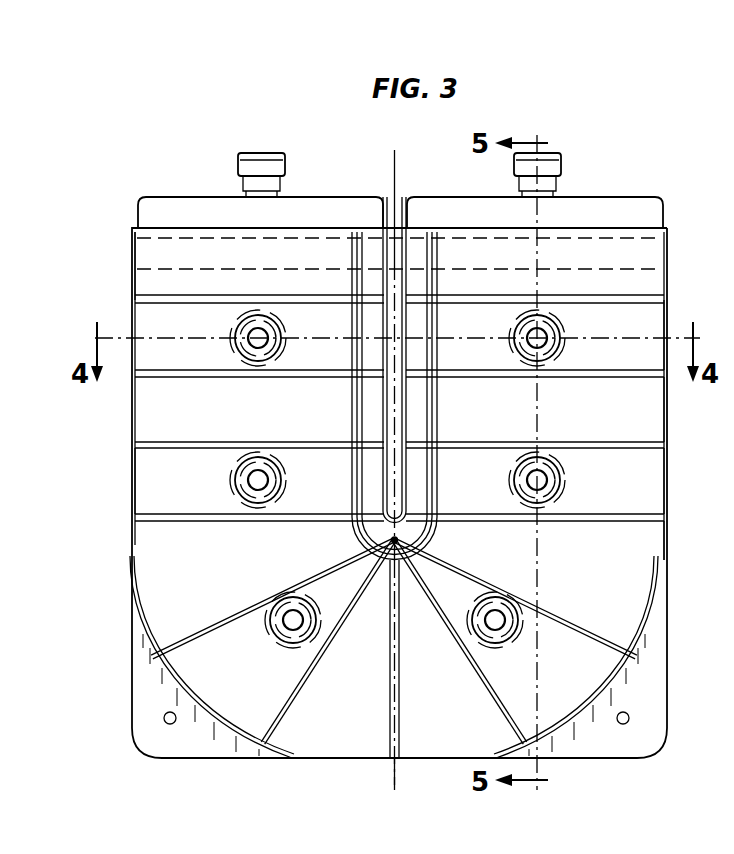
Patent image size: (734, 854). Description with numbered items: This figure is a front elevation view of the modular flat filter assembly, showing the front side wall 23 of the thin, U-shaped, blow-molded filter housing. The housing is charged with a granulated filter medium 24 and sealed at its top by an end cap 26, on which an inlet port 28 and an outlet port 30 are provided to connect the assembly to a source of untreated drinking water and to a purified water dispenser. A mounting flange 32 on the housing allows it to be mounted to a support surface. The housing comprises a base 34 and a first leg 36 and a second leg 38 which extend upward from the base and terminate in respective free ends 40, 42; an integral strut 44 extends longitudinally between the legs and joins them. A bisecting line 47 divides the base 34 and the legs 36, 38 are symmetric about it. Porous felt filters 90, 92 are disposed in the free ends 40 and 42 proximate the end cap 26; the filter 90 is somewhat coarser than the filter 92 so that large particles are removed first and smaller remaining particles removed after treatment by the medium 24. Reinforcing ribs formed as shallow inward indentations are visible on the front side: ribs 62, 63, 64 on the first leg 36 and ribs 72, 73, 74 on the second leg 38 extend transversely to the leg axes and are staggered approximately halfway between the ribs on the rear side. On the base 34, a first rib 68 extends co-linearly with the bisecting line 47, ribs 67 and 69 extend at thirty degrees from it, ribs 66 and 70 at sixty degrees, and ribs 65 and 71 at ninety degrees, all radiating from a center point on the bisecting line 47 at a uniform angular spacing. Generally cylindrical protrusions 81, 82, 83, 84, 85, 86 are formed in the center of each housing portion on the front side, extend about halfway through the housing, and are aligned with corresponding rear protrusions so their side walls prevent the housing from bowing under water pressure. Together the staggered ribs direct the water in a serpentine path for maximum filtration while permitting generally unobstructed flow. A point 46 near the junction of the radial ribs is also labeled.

The front side wall 23 is at (160, 541).
The filter medium 24 is at (315, 742).
The end cap 26 is at (172, 197).
The inlet port 28 is at (260, 155).
The outlet port 30 is at (560, 160).
The mounting flange 32 is at (653, 705).
The base 34 is at (333, 760).
The first leg 36 is at (138, 480).
The second leg 38 is at (668, 470).
The free end 40 is at (135, 232).
The free end 42 is at (667, 232).
The integral strut 44 is at (383, 197).
The hub 46 is at (405, 522).
The bisecting line 47 is at (398, 768).
The rib 62 is at (152, 297).
The rib 63 is at (157, 378).
The rib 64 is at (220, 445).
The rib 65 is at (205, 522).
The rib 66 is at (216, 612).
The rib 67 is at (290, 710).
The first rib 68 is at (400, 690).
The rib 69 is at (497, 708).
The rib 70 is at (578, 618).
The rib 71 is at (664, 545).
The rib 72 is at (668, 438).
The rib 73 is at (640, 378).
The rib 74 is at (668, 318).
The protrusion 81 is at (283, 334).
The protrusion 82 is at (234, 478).
The protrusion 83 is at (272, 642).
The protrusion 84 is at (492, 650).
The protrusion 85 is at (563, 478).
The protrusion 86 is at (562, 334).
The porous filter 90 is at (148, 240).
The porous filter 92 is at (640, 257).